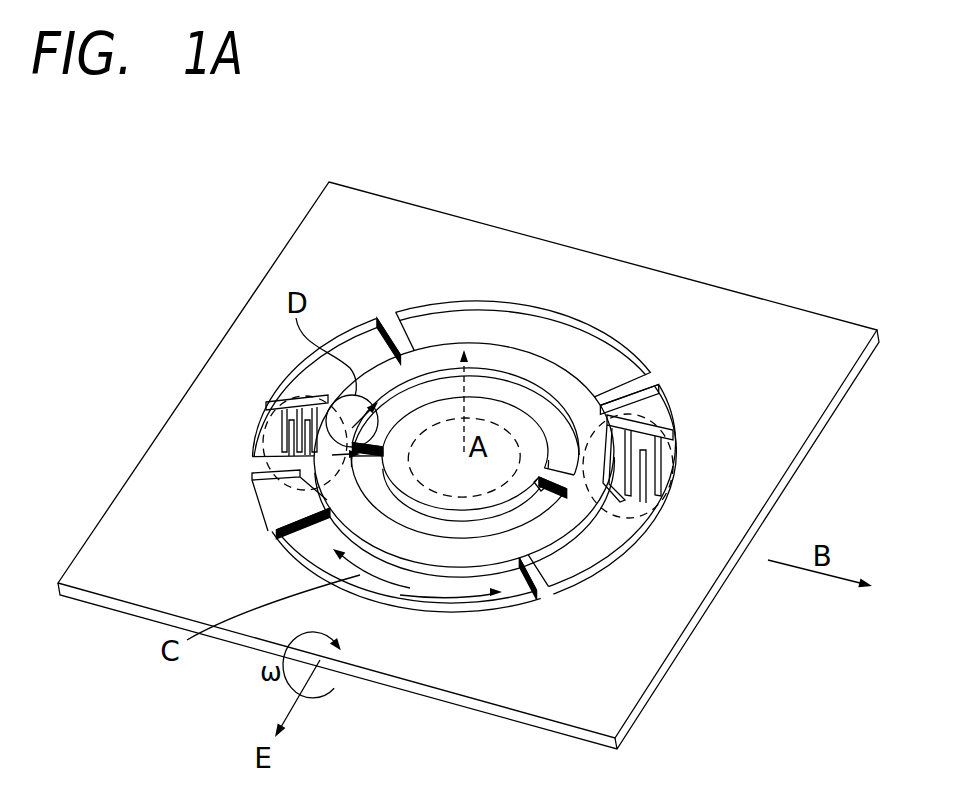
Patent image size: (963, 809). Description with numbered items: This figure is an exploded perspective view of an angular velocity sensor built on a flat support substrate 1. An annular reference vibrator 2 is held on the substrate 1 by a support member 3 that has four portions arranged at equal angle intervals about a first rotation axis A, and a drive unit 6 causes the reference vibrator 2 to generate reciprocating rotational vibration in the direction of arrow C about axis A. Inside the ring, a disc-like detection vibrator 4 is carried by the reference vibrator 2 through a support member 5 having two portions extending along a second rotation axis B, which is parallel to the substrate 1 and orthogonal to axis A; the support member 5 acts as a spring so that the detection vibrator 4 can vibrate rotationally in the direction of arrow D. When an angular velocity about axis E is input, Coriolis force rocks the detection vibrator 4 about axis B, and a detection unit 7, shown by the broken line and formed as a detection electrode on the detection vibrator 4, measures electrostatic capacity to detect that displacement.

The support substrate 1 is at (333, 217).
The reference vibrator 2 is at (453, 350).
The support member 3 is at (393, 330).
The detection vibrator 4 is at (540, 447).
The support member 5 is at (416, 380).
The drive unit 6 is at (294, 411).
The detection unit 7 is at (497, 425).